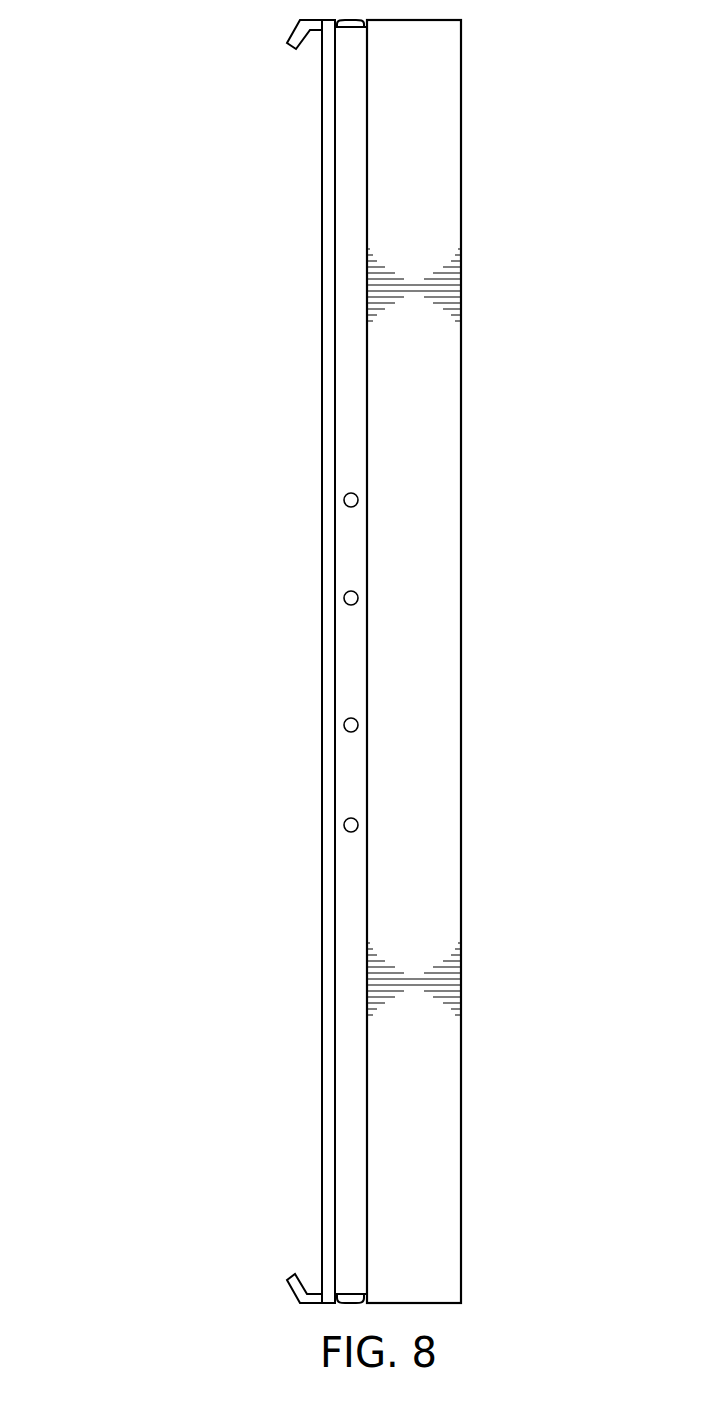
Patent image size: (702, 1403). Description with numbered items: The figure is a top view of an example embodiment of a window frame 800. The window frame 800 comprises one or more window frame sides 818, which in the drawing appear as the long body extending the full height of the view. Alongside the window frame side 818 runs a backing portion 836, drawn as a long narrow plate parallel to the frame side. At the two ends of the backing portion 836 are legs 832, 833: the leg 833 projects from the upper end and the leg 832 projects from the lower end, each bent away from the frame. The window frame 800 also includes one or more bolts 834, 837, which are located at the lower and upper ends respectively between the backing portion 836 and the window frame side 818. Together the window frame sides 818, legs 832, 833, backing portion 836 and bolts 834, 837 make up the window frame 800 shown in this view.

The window frame 800 is at (135, 65).
The window frame side 818 is at (453, 545).
The leg 832 is at (289, 1275).
The leg 833 is at (290, 48).
The bolt 834 is at (350, 1303).
The backing portion 836 is at (328, 1040).
The bolt 837 is at (348, 21).